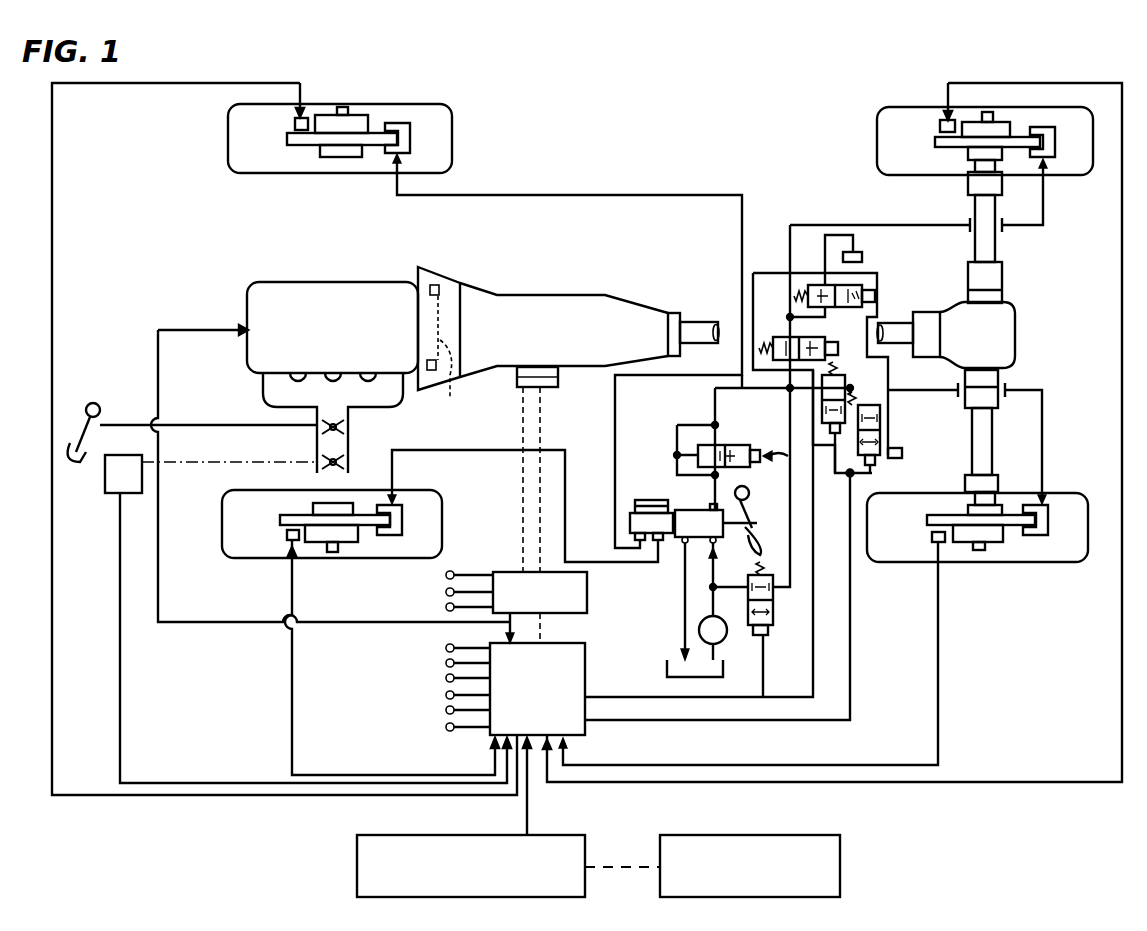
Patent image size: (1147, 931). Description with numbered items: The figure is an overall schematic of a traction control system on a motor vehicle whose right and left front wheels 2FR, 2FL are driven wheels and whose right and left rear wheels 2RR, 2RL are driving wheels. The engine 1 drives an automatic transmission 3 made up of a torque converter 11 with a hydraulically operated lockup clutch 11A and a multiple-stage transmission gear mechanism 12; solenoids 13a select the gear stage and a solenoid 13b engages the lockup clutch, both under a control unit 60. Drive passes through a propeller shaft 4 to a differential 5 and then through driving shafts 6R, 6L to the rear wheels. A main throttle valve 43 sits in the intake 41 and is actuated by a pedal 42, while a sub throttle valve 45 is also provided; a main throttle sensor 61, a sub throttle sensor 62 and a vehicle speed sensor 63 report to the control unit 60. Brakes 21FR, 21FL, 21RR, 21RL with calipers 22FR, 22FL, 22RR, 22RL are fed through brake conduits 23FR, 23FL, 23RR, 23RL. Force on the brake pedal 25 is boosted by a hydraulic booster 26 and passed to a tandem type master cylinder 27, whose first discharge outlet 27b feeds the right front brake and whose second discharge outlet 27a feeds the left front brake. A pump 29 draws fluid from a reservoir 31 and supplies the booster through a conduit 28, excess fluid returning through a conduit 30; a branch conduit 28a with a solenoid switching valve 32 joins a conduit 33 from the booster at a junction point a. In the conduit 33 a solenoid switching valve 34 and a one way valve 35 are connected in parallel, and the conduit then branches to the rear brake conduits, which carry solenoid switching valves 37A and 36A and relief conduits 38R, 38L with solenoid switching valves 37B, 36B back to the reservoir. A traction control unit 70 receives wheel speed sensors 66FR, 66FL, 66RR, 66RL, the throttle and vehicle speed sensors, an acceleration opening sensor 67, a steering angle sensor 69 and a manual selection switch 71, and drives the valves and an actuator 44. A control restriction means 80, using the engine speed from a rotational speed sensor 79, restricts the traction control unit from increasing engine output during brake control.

The engine 1 is at (302, 282).
The automatic transmission 3 is at (570, 308).
The propeller shaft 4 is at (692, 322).
The differential 5 is at (1015, 330).
The right driving shaft 6R is at (996, 238).
The left driving shaft 6L is at (992, 445).
The torque converter 11 is at (452, 282).
The lockup clutch 11A is at (447, 382).
The multiple-stage transmission gear mechanism 12 is at (505, 300).
The solenoids 13a is at (519, 380).
The solenoid 13b is at (553, 375).
The right front wheel 2FR is at (356, 109).
The left front wheel 2FL is at (339, 534).
The right rear wheel 2RR is at (968, 135).
The left rear wheel 2RL is at (834, 605).
The right front brake 21FR is at (378, 112).
The left front brake 21FL is at (370, 548).
The right rear brake 21RR is at (1025, 120).
The left rear brake 21RL is at (1010, 548).
The right front caliper 22FR is at (412, 136).
The left front caliper 22FL is at (404, 525).
The right rear caliper 22RR is at (1055, 158).
The left rear caliper 22RL is at (1046, 518).
The right front brake conduit 23FR is at (510, 195).
The left front brake conduit 23FL is at (445, 450).
The right rear brake conduit 23RR is at (925, 225).
The left rear brake conduit 23RL is at (1042, 390).
The brake pedal 25 is at (762, 525).
The hydraulic booster 26 is at (700, 508).
The tandem type master cylinder 27 is at (628, 529).
The second discharge outlet 27a is at (660, 545).
The first discharge outlet 27b is at (640, 545).
The conduit 28 is at (708, 600).
The branch conduit 28a is at (782, 595).
The pump 29 is at (727, 634).
The conduit 30 is at (680, 640).
The reservoir 31 is at (864, 257).
The solenoid switching valve 32 is at (748, 582).
The conduit 33 is at (740, 388).
The solenoid switching valve 34 is at (726, 444).
The one way valve 35 is at (677, 455).
The solenoid switching valve 36A is at (843, 372).
The solenoid switching valve 36B is at (882, 412).
The solenoid switching valve 37A is at (812, 337).
The solenoid switching valve 37B is at (870, 290).
The right relief conduit 38R is at (832, 235).
The left relief conduit 38L is at (902, 440).
The intake 41 is at (317, 444).
The pedal 42 is at (75, 463).
The main throttle valve 43 is at (348, 422).
The actuator 44 is at (105, 488).
The sub throttle valve 45 is at (342, 460).
The control unit 60 is at (580, 602).
The main throttle sensor 61 is at (446, 575).
The sub throttle sensor 62 is at (446, 592).
The vehicle speed sensor 63 is at (446, 607).
The wheel speed sensor 66FR is at (308, 112).
The wheel speed sensor 66FL is at (286, 535).
The wheel speed sensor 66RR is at (940, 117).
The wheel speed sensor 66RL is at (930, 537).
The acceleration opening sensor 67 is at (446, 695).
The steering angle sensor 69 is at (446, 710).
The traction control unit 70 is at (578, 682).
The manual selection switch 71 is at (446, 727).
The rotational speed sensor 79 is at (808, 835).
The control restriction means 80 is at (432, 835).
The junction point a is at (790, 392).